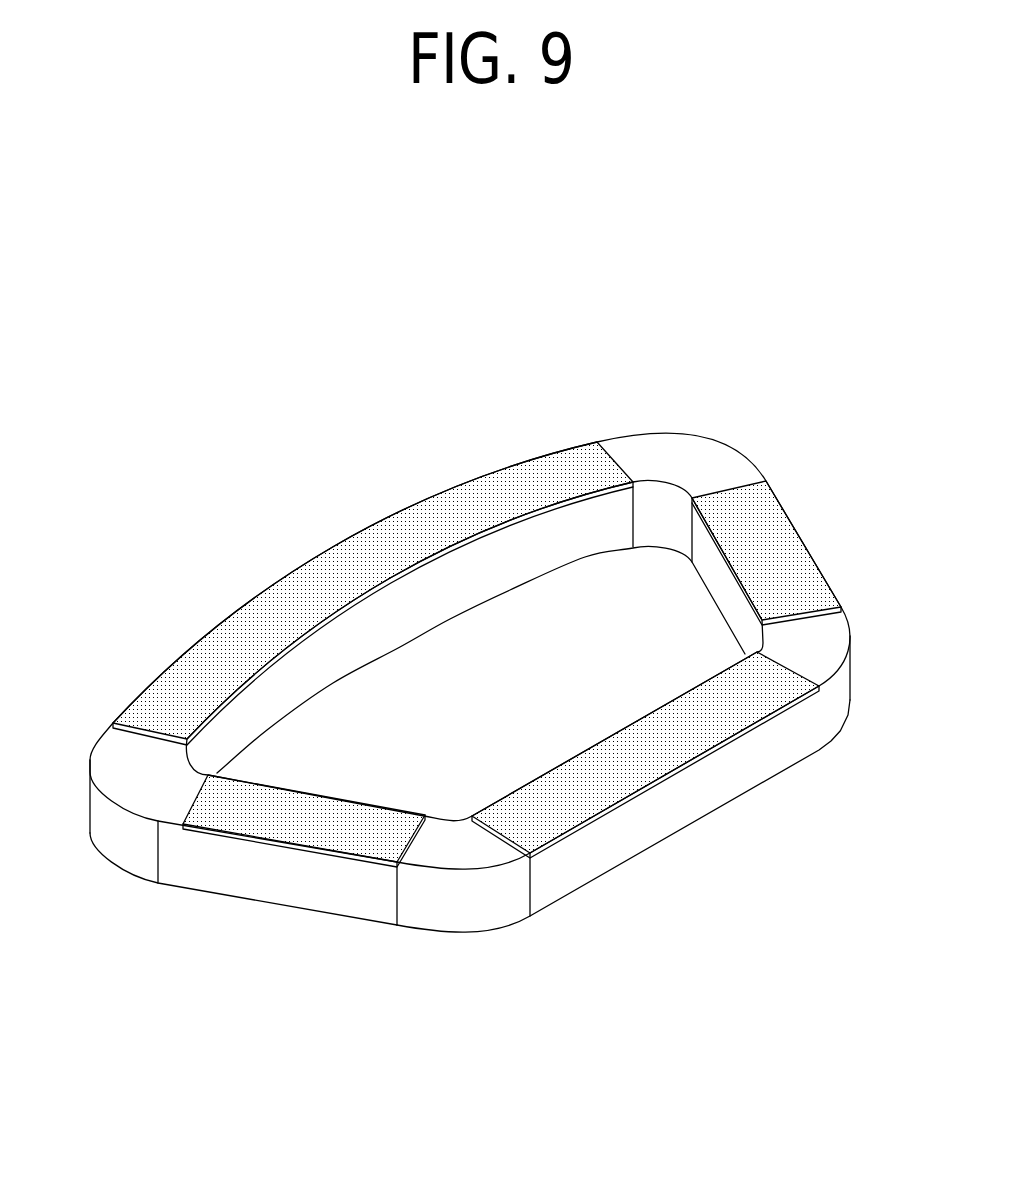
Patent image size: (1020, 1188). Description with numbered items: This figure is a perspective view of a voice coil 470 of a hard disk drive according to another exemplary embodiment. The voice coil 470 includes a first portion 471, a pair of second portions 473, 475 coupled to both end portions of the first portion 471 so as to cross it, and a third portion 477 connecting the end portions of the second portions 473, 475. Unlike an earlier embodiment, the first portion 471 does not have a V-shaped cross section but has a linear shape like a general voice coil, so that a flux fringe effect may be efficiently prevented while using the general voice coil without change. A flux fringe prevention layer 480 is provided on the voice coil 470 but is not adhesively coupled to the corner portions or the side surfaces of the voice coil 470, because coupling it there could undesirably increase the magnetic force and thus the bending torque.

The voice coil 470 is at (142, 315).
The first portion 471 is at (610, 843).
The second portion 473 is at (198, 868).
The second portion 475 is at (732, 602).
The third portion 477 is at (345, 643).
The flux fringe prevention layer 480 is at (341, 553).